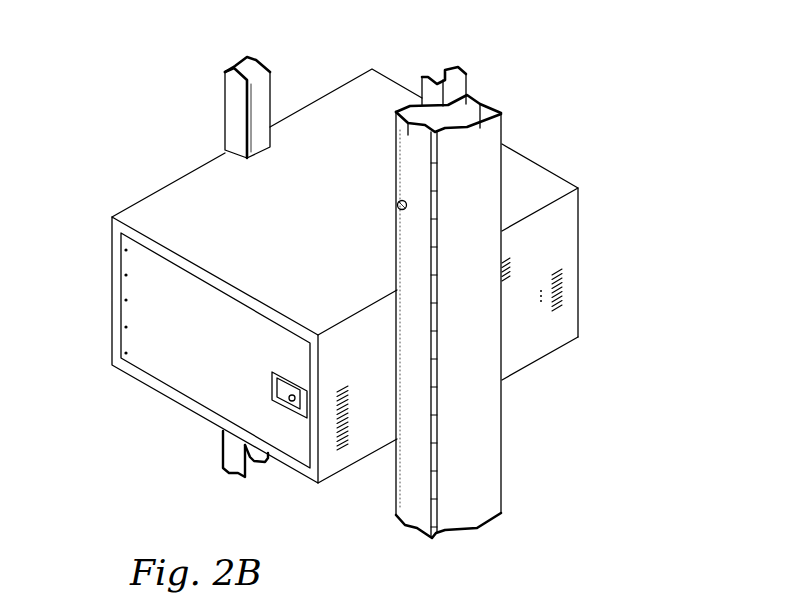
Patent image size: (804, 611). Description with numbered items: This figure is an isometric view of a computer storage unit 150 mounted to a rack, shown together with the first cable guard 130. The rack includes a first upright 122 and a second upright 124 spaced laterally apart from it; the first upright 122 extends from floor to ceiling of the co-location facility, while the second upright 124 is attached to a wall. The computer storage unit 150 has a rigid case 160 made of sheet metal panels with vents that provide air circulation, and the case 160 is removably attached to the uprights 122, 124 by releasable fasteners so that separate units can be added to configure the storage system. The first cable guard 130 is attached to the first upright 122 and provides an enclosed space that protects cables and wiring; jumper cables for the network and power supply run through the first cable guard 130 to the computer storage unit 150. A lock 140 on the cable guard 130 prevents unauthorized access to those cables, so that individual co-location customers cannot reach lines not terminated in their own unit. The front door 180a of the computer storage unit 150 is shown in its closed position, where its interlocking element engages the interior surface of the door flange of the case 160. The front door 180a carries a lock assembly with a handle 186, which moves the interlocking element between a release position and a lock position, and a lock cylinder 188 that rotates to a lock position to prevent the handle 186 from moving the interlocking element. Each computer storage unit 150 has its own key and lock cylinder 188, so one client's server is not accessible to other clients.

The first upright 122 is at (468, 82).
The second upright 124 is at (225, 98).
The first cable guard 130 is at (410, 247).
The lock 140 is at (388, 195).
The computer storage unit 150 is at (574, 372).
The case 160 is at (318, 486).
The front door 180a is at (147, 307).
The handle 186 is at (302, 413).
The lock cylinder 188 is at (292, 395).